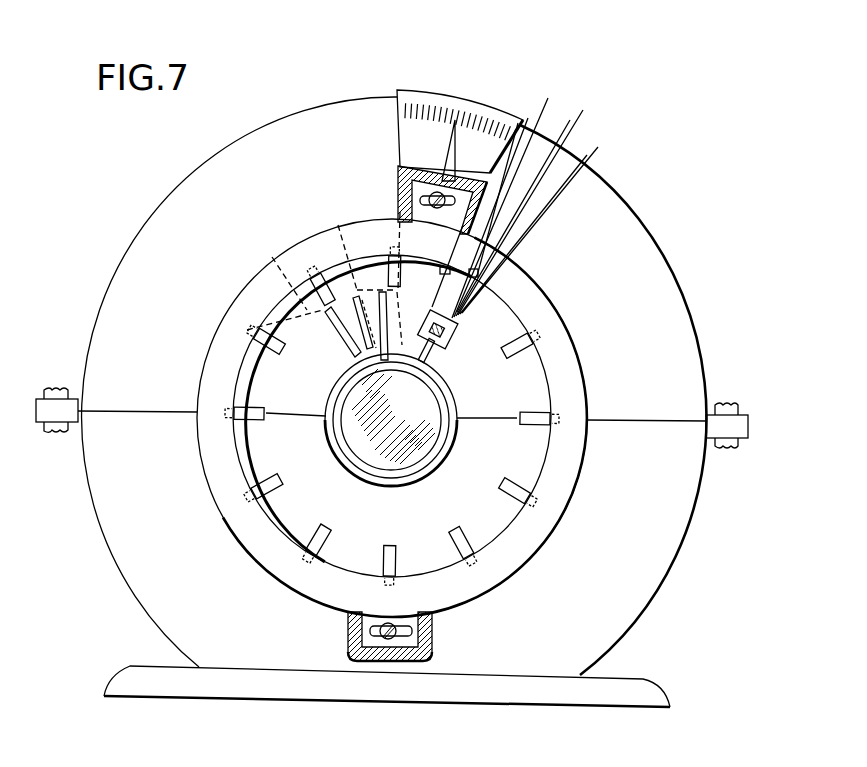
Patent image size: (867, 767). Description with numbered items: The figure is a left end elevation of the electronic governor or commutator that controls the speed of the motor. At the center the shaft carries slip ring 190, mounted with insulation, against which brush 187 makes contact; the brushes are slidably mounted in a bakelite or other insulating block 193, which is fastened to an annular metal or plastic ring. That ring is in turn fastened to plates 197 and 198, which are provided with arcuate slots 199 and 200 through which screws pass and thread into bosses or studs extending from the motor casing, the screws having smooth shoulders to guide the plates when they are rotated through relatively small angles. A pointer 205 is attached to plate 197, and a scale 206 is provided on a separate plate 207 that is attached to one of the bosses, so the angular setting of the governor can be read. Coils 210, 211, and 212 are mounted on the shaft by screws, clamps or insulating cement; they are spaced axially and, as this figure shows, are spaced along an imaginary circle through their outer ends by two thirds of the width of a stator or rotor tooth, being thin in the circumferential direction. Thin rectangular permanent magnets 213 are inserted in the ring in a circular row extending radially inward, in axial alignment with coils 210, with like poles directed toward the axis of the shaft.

The brush 187 is at (430, 352).
The slip ring 190 is at (369, 479).
The insulating block 193 is at (448, 340).
The plate 197 is at (410, 212).
The plate 198 is at (365, 637).
The arcuate slot 199 is at (406, 188).
The arcuate slot 200 is at (433, 632).
The pointer 205 is at (461, 152).
The scale 206 is at (489, 113).
The plate 207 is at (425, 88).
The coil 210 is at (392, 335).
The coil 211 is at (370, 343).
The coil 212 is at (343, 328).
The permanent magnet 213 is at (246, 410).